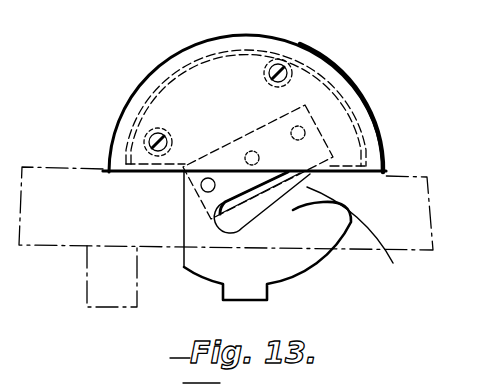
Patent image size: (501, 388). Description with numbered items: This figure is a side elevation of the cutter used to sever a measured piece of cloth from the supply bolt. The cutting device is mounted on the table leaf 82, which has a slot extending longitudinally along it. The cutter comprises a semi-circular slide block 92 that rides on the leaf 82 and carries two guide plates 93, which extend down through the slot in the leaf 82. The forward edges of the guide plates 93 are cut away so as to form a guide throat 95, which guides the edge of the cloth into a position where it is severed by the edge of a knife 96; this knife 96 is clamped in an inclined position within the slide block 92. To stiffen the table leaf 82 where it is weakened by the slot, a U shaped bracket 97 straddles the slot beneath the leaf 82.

The leaf 82 is at (405, 175).
The semi-circular slide block 92 is at (343, 90).
The guide plates 93 is at (293, 257).
The guide throat 95 is at (362, 238).
The knife 96 is at (239, 202).
The U shaped brackets 97 is at (93, 270).